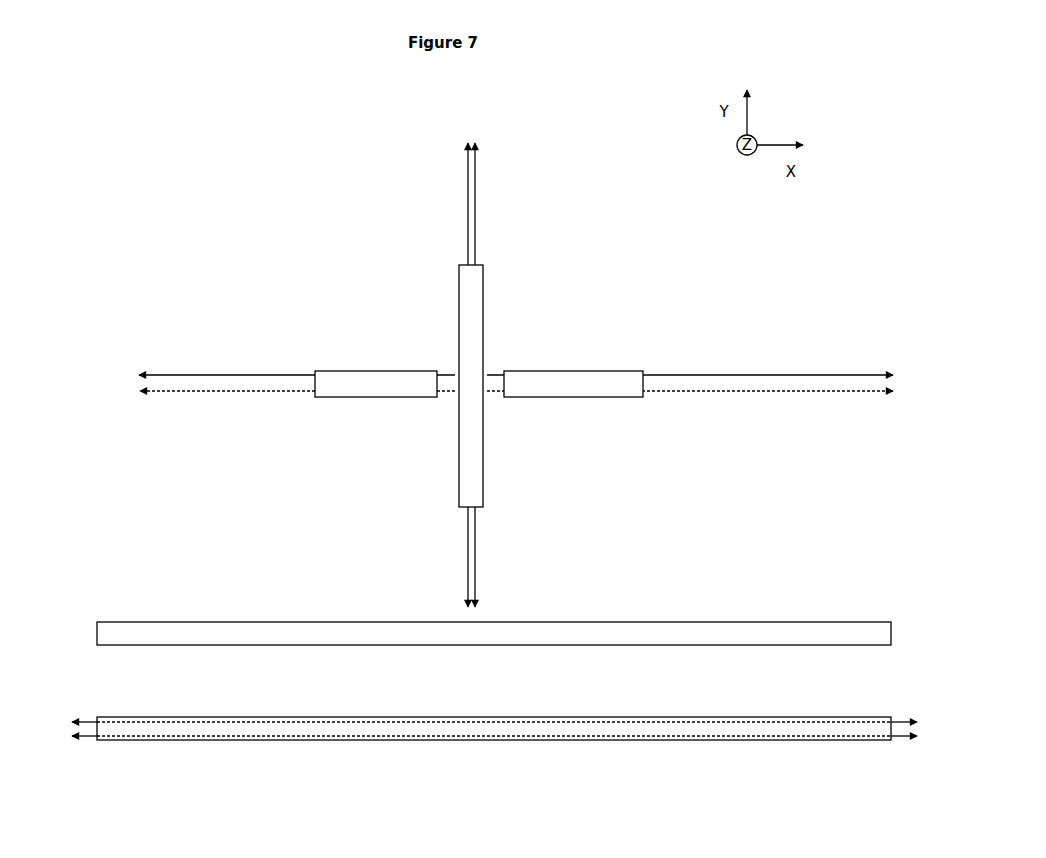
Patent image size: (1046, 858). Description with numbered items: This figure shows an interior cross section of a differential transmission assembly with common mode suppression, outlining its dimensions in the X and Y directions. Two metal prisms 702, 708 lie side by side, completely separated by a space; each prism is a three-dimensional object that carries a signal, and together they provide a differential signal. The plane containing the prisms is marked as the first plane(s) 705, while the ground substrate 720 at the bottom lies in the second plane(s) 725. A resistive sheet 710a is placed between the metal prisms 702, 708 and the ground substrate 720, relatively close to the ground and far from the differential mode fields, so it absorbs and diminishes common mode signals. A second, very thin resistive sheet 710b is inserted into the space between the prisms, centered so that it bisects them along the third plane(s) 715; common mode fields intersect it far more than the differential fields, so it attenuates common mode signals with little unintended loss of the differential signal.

The metal prism 702 is at (376, 338).
The metal prism 708 is at (573, 342).
The First Plane(s) 705 is at (856, 393).
The Third Plane(s) 715 is at (455, 226).
The Second Plane(s) 725 is at (909, 762).
The resistive sheet 710a is at (494, 609).
The resistive sheet 710b is at (403, 386).
The ground substrate 720 is at (494, 756).